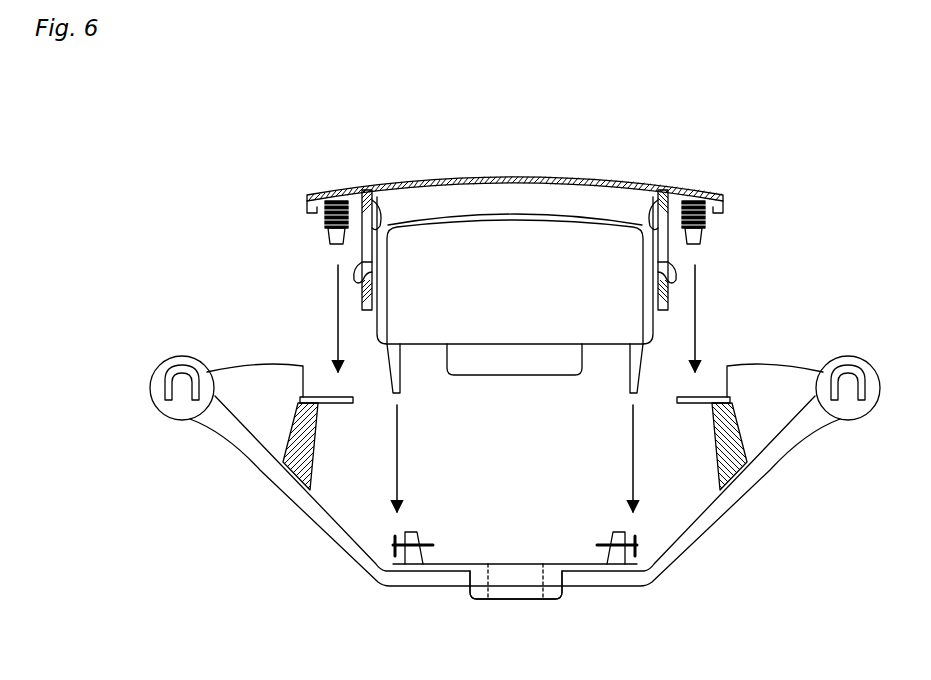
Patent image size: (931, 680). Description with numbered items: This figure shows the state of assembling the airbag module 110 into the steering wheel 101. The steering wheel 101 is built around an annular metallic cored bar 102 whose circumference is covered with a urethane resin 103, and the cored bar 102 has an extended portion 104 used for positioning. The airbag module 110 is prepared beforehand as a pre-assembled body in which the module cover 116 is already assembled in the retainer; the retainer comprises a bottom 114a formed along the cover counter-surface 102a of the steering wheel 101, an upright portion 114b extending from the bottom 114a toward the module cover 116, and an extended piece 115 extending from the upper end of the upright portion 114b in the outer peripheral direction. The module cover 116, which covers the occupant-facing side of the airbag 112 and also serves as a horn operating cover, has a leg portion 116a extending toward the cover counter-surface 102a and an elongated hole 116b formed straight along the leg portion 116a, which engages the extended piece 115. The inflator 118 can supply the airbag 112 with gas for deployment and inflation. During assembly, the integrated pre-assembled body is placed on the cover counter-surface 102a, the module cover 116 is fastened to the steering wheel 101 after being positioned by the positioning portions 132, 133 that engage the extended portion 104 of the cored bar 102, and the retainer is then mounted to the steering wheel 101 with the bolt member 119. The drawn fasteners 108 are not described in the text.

The steering wheel 101 is at (183, 352).
The cored bar 102 is at (230, 397).
The cover counter-surface 102a is at (450, 578).
The urethane resin 103 is at (188, 405).
The extended portion 104 is at (279, 449).
The bolt 108 is at (310, 200).
The airbag module 110 is at (503, 214).
The airbag 112 is at (445, 300).
The bottom 114a is at (528, 345).
The upright portion 114b is at (378, 322).
The extended piece 115 is at (360, 266).
The module cover 116 is at (571, 180).
The leg portion 116a is at (345, 188).
The elongated hole 116b is at (370, 192).
The inflator 118 is at (498, 363).
The bolt member 119 is at (395, 548).
The positioning portion 132 is at (713, 228).
The positioning portion 133 is at (312, 226).